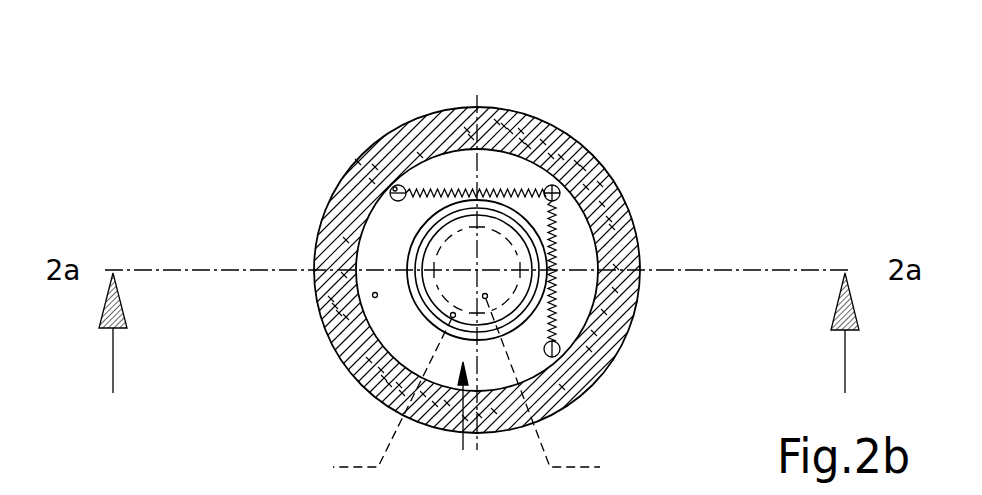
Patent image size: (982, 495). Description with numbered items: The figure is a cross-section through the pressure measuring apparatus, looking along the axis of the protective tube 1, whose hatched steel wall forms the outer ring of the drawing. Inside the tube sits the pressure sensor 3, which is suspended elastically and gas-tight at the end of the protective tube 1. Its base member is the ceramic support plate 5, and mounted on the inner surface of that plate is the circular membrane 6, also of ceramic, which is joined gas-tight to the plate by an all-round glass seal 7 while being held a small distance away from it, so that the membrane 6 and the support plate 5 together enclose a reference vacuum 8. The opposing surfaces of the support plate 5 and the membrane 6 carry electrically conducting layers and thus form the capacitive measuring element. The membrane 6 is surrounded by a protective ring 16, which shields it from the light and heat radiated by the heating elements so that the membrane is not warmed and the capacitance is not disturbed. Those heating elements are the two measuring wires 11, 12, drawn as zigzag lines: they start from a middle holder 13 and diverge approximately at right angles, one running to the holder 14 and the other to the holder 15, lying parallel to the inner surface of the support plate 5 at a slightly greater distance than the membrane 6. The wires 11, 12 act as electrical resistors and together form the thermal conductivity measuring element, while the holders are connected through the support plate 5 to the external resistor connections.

The protective tube 1 is at (631, 316).
The pressure sensor 3 is at (463, 425).
The support plate 5 is at (373, 296).
The membrane 6 is at (457, 284).
The glass seal 7 is at (394, 390).
The reference vacuum 8 is at (542, 381).
The measuring wire 11 is at (519, 191).
The measuring wire 12 is at (553, 252).
The middle holder 13 is at (587, 188).
The holder 14 is at (397, 185).
The holder 15 is at (563, 353).
The protective ring 16 is at (413, 239).